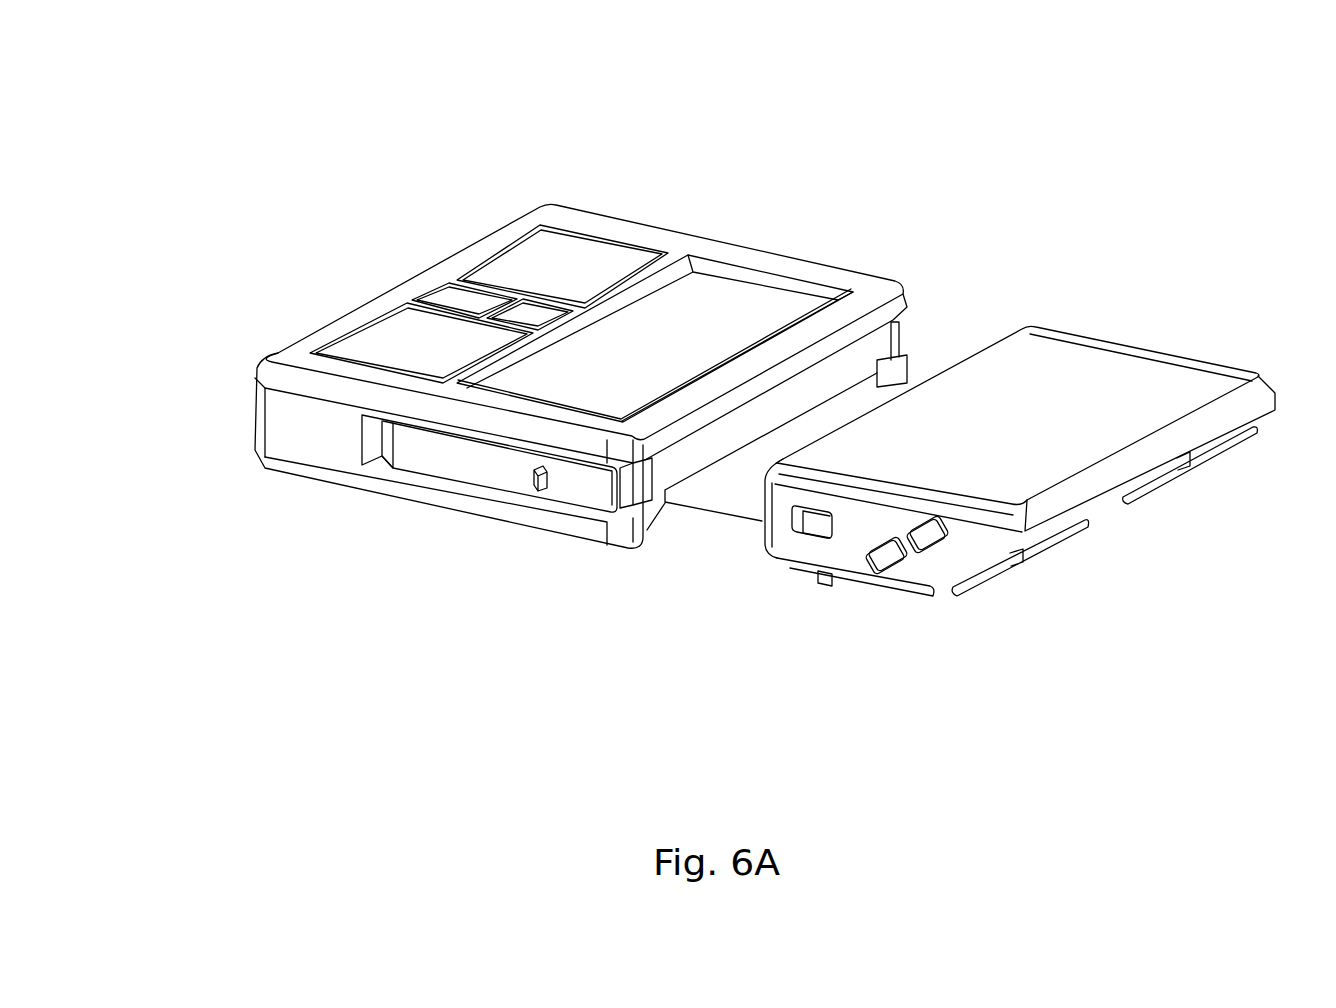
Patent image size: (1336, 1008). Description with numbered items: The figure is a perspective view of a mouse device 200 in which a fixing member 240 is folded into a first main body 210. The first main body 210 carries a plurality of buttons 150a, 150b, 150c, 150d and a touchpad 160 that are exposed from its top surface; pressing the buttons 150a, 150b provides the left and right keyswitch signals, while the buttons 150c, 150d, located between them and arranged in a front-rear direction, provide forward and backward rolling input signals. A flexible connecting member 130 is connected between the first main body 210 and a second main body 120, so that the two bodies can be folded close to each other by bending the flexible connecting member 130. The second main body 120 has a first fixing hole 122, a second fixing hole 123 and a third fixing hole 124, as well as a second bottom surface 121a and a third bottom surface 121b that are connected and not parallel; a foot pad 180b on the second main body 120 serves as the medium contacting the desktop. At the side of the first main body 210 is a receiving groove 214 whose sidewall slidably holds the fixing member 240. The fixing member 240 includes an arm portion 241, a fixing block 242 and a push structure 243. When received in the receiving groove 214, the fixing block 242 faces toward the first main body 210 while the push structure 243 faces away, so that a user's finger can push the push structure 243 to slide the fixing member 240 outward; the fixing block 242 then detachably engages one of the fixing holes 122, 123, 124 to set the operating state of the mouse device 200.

The mouse device 200 is at (273, 62).
The first main body 210 is at (234, 264).
The button 150a is at (390, 336).
The button 150b is at (540, 247).
The button 150c is at (438, 297).
The button 150d is at (526, 306).
The touchpad 160 is at (723, 294).
The receiving groove 214 is at (380, 470).
The fixing member 240 is at (640, 628).
The arm portion 241 is at (483, 476).
The fixing block 242 is at (643, 482).
The push structure 243 is at (530, 494).
The flexible connecting member 130 is at (878, 387).
The second main body 120 is at (1068, 358).
The second bottom surface 121a is at (903, 595).
The third bottom surface 121b is at (1100, 508).
The first fixing hole 122 is at (803, 535).
The second fixing hole 123 is at (876, 570).
The third fixing hole 124 is at (939, 557).
The foot pad 180b is at (827, 579).